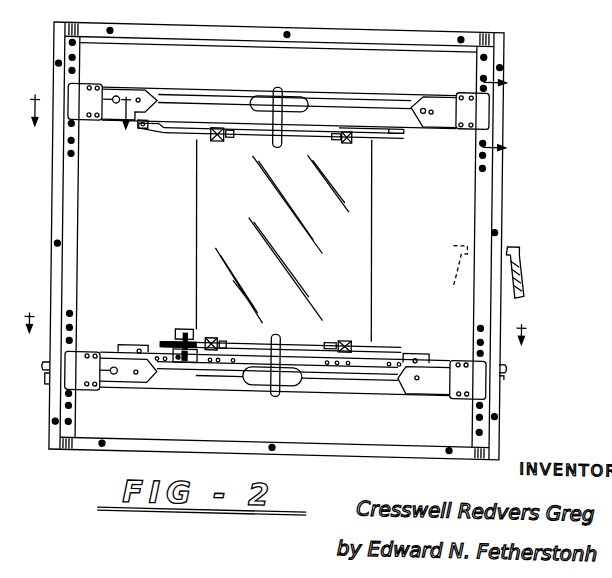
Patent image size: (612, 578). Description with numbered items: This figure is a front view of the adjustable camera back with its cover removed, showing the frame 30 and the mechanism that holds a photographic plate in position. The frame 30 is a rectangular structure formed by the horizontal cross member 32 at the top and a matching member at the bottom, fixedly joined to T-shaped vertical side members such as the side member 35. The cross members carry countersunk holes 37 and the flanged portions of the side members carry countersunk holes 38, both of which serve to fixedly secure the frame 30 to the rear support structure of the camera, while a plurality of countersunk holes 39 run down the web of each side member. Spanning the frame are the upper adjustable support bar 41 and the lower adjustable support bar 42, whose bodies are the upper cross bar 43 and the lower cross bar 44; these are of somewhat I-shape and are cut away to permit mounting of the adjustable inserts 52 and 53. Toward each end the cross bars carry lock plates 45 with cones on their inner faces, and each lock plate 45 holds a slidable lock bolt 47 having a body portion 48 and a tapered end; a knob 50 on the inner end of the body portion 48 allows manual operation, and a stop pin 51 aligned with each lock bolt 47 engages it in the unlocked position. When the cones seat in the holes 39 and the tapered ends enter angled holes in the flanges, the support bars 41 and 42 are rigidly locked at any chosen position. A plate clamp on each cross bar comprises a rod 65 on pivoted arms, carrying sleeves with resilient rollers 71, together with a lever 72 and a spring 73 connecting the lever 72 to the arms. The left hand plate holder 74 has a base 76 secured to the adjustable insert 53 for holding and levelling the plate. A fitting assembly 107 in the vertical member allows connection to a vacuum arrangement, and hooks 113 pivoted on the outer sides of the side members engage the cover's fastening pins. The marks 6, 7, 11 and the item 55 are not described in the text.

The frame 30 is at (276, 230).
The horizontal cross member 32 is at (391, 29).
The vertical side member 35 is at (501, 189).
The holes 37 is at (113, 28).
The holes 38 is at (58, 62).
The holes 39 is at (75, 157).
The upper adjustable support bar 41 is at (210, 80).
The lower adjustable support bar 42 is at (168, 392).
The upper cross bar 43 is at (335, 93).
The lower cross bar 44 is at (321, 387).
The lock plates 45 is at (71, 91).
The lock bolt 47 is at (104, 366).
The body portion 48 is at (108, 121).
The knob 50 is at (119, 95).
The stop pin 51 is at (425, 100).
The adjustable insert 52 is at (393, 122).
The adjustable insert 53 is at (232, 363).
The clip 55 is at (131, 341).
The rod 65 is at (187, 131).
The resilient rollers 71 is at (219, 139).
The lever 72 is at (299, 86).
The spring 73 is at (264, 92).
The left hand plate holder 74 is at (186, 322).
The base 76 is at (188, 351).
The fitting assembly 107 is at (517, 249).
The hooks 113 is at (45, 388).
The section line 6 is at (275, 341).
The section line 7 is at (88, 123).
The section line 11 is at (509, 114).